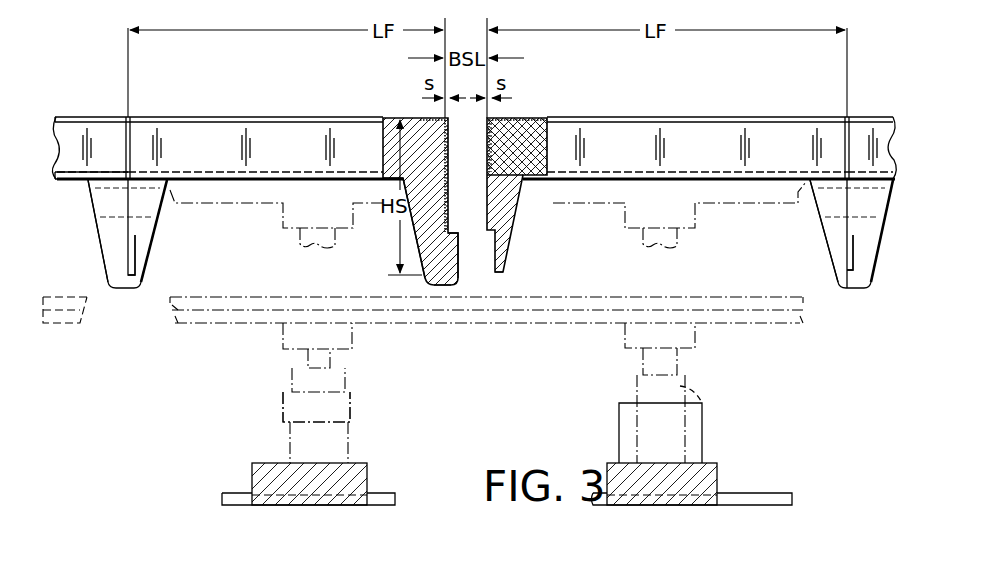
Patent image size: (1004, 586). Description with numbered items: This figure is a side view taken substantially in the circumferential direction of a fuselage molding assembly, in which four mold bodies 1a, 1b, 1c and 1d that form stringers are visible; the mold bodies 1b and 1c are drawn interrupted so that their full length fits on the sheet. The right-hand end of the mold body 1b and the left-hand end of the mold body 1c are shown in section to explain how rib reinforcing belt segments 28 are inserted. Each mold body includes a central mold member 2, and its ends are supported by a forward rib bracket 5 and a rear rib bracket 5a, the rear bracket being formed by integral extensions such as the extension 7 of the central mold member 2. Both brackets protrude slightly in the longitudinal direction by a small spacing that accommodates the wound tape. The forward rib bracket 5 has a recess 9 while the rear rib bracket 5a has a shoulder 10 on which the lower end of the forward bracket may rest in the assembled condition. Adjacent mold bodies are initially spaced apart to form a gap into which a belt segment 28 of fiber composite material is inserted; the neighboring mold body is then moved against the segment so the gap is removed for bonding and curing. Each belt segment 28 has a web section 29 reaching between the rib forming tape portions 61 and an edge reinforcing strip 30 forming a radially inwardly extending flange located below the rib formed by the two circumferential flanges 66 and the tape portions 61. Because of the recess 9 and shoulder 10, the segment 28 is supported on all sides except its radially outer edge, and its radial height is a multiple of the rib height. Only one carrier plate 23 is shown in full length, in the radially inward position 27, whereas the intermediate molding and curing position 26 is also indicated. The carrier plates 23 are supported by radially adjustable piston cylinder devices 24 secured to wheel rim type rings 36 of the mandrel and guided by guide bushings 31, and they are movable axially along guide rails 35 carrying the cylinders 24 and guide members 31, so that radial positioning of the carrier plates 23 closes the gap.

The mold body 1a is at (80, 130).
The mold body 1b is at (212, 133).
The mold body 1c is at (710, 128).
The mold body 1d is at (876, 130).
The central mold member 2 is at (518, 133).
The rib bracket 5 is at (510, 195).
The rear rib bracket 5a is at (410, 252).
The extension 7 is at (428, 220).
The recess 9 is at (487, 275).
The shoulder 10 is at (466, 280).
The carrier plate 23 is at (244, 195).
The radially adjustable piston cylinder device 24 is at (310, 215).
The intermediate molding and curing position 26 is at (745, 183).
The radially inward position 27 is at (147, 300).
The rib reinforcing belt segment 28 is at (460, 198).
The web section 29 is at (451, 182).
The edge reinforcing strip 30 is at (455, 262).
The guide bushing 31 is at (686, 222).
The guide rail 35 is at (392, 501).
The wheel rim type ring 36 is at (363, 482).
The tape portion 61 is at (487, 150).
The circumferential flange 66 is at (440, 117).